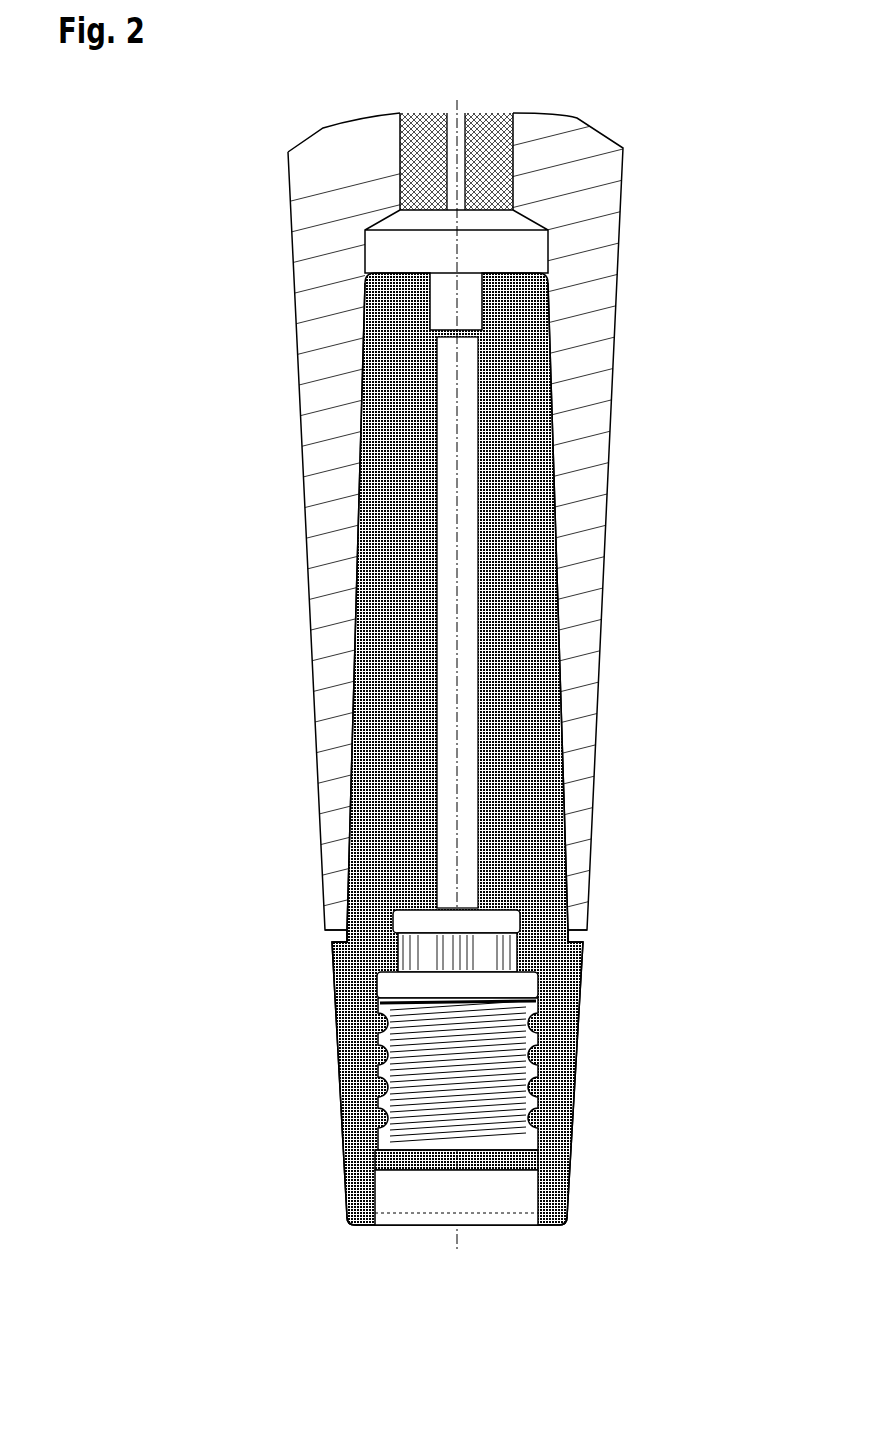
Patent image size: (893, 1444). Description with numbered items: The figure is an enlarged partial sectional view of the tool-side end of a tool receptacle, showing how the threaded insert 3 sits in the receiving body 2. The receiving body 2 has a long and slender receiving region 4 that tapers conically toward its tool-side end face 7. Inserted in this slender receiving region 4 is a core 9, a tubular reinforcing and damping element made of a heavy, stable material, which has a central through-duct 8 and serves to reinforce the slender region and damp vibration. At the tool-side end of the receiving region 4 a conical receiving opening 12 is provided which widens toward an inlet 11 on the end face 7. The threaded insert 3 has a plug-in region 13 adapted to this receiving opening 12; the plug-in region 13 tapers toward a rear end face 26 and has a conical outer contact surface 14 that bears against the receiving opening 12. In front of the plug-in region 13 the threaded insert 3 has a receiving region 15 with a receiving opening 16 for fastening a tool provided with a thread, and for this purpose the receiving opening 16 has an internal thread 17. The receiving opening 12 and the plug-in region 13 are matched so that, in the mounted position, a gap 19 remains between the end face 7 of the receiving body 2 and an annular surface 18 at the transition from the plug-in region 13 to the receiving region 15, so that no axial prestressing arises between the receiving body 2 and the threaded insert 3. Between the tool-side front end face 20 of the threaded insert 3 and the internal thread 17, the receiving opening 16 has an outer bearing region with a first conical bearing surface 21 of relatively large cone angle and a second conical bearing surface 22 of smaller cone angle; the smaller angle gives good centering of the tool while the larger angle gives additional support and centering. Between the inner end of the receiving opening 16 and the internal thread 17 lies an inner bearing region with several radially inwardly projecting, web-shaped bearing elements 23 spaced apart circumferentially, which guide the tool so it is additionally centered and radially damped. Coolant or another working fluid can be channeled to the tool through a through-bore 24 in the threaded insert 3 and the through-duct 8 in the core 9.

The receiving body 2 is at (457, 686).
The threaded insert 3 is at (335, 1017).
The receiving region 4 is at (583, 303).
The tool-side end face 7 is at (585, 922).
The through-duct 8 is at (453, 137).
The core 9 is at (497, 140).
The inlet 11 is at (332, 933).
The receiving opening 12 is at (365, 492).
The plug-in region 13 is at (530, 565).
The outer contact surface 14 is at (352, 650).
The receiving region 15 is at (560, 1040).
The receiving opening 16 is at (495, 1238).
The internal thread 17 is at (528, 1095).
The annular surface 18 is at (585, 945).
The gap 19 is at (577, 932).
The front end face 20 is at (567, 1228).
The first conical bearing surface 21 is at (365, 1227).
The second conical bearing surface 22 is at (377, 1188).
The bearing elements 23 is at (457, 945).
The through-bore 24 is at (462, 760).
The rear end face 26 is at (377, 277).